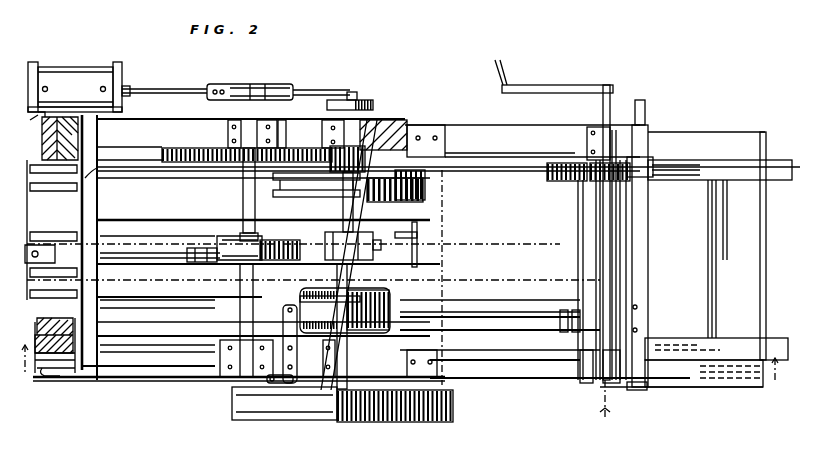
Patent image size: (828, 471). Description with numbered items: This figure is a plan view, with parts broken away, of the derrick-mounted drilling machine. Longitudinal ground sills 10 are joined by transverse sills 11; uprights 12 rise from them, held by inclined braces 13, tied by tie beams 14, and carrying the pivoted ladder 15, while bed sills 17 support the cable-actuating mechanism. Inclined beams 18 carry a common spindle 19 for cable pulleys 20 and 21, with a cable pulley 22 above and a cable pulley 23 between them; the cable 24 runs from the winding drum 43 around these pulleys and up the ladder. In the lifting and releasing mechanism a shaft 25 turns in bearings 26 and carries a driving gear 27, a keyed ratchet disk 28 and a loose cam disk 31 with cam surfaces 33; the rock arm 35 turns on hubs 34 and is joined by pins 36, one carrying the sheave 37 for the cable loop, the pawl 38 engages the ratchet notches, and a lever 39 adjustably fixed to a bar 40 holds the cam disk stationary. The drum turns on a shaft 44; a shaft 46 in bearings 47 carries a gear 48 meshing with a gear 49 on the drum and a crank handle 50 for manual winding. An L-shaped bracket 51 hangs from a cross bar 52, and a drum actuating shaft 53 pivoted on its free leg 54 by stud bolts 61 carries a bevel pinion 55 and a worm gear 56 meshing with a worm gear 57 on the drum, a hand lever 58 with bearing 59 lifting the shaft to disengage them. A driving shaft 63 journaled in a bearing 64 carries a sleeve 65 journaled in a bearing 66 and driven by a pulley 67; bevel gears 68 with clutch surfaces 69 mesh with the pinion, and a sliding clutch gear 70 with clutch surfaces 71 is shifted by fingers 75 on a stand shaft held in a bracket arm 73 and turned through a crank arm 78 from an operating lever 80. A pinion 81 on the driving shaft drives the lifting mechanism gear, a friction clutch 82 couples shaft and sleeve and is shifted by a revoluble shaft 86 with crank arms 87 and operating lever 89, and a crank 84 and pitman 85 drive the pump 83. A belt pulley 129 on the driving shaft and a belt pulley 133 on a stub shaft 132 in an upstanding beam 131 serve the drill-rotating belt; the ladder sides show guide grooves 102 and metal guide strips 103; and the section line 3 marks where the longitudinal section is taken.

The section line 3 is at (399, 370).
The longitudinal ground sills 10 is at (510, 172).
The transverse sills 11 is at (763, 294).
The uprights 12 is at (104, 124).
The inclined braces 13 is at (428, 124).
The tie beams 14 is at (86, 383).
The ladder 15 is at (84, 160).
The bed sills 17 is at (167, 95).
The inclined beams 18 is at (85, 205).
The common spindle 19 is at (72, 205).
The cable pulley 20 is at (37, 213).
The cable pulley 21 is at (90, 294).
The cable pulley 22 is at (95, 236).
The cable pulley 23 is at (50, 256).
The cable 24 is at (504, 275).
The shaft 25 is at (240, 300).
The bearings 26 is at (228, 130).
The driving gear 27 is at (193, 164).
The ratchet disk 28 is at (325, 238).
The cam disk 31 is at (289, 249).
The cam surfaces 33 is at (258, 285).
The hubs 34 is at (236, 290).
The rock arm 35 is at (196, 248).
The pins 36 is at (205, 256).
The sheave 37 is at (188, 256).
The pawl 38 is at (246, 230).
The lever 39 is at (440, 278).
The bar 40 is at (150, 283).
The winding drum 43 is at (578, 247).
The shaft 44 is at (575, 345).
The shaft 46 is at (603, 385).
The bearings 47 is at (600, 127).
The gear 48 is at (590, 132).
The gear 49 is at (560, 182).
The crank handle 50 is at (570, 85).
The L-shaped bracket 51 is at (415, 244).
The cross bar 52 is at (440, 128).
The drum actuating shaft 53 is at (515, 316).
The free leg 54 is at (437, 365).
The bevel pinion 55 is at (413, 306).
The worm gear 56 is at (628, 298).
The worm gear 57 is at (565, 310).
The hand lever 58 is at (648, 236).
The bearing 59 is at (648, 330).
The stud bolts 61 is at (648, 305).
The driving shaft 63 is at (376, 202).
The bearing 64 is at (382, 120).
The sleeve 65 is at (335, 385).
The bearing 66 is at (330, 383).
The driving pulley 67 is at (452, 422).
The bevel gears 68 is at (338, 290).
The clutch surface 69 is at (304, 302).
The clutch gear 70 is at (385, 290).
The clutch surfaces 71 is at (372, 290).
The bracket arm 73 is at (278, 383).
The fingers 75 is at (283, 330).
The crank arm 78 is at (297, 383).
The operating lever 80 is at (62, 375).
The pinion 81 is at (330, 122).
The friction clutch 82 is at (384, 247).
The pump 83 is at (85, 64).
The crank 84 is at (374, 100).
The pitman 85 is at (290, 85).
The revoluble shaft 86 is at (158, 182).
The crank arms 87 is at (336, 199).
The operating lever 89 is at (130, 203).
The guide grooves 102 is at (55, 120).
The metal guide strips 103 is at (50, 120).
The belt pulley 129 is at (426, 195).
The upstanding beam 131 is at (100, 175).
The stub shaft 132 is at (82, 130).
The belt pulley 133 is at (105, 190).